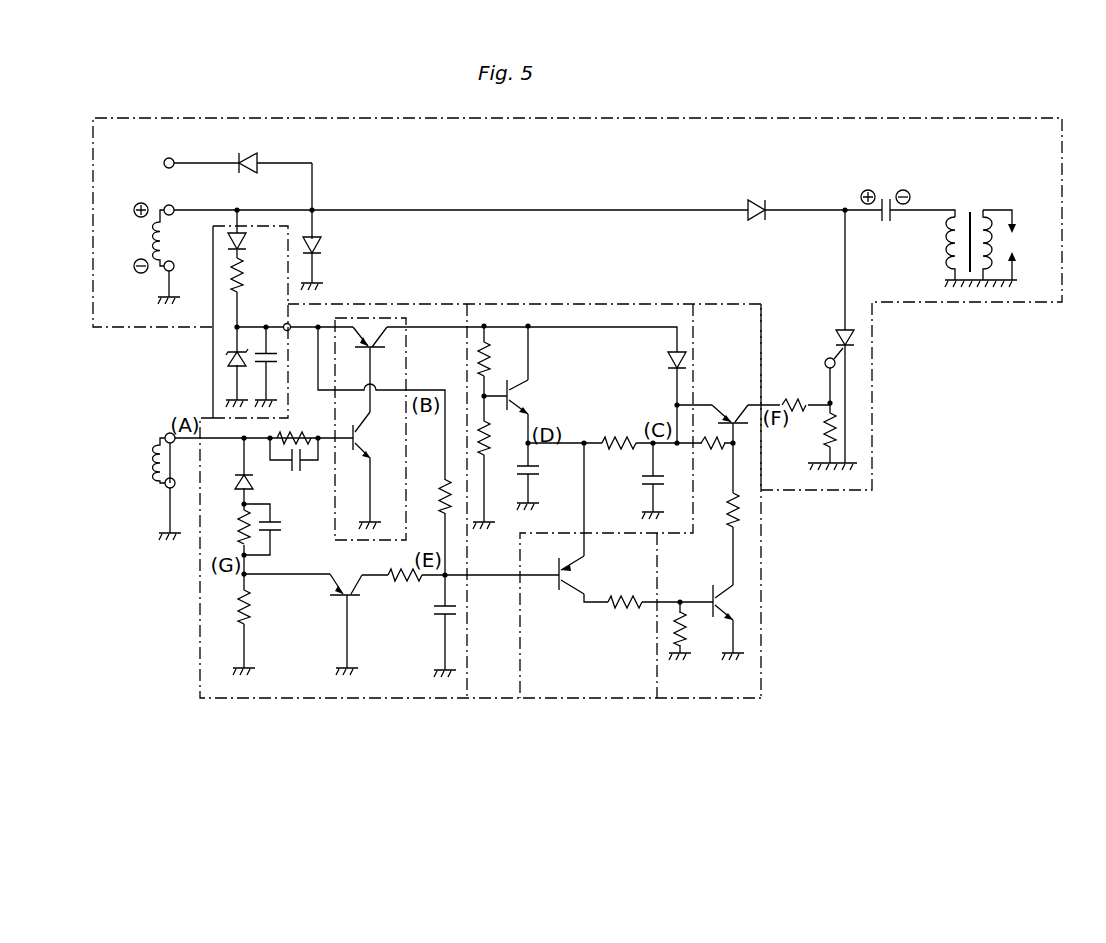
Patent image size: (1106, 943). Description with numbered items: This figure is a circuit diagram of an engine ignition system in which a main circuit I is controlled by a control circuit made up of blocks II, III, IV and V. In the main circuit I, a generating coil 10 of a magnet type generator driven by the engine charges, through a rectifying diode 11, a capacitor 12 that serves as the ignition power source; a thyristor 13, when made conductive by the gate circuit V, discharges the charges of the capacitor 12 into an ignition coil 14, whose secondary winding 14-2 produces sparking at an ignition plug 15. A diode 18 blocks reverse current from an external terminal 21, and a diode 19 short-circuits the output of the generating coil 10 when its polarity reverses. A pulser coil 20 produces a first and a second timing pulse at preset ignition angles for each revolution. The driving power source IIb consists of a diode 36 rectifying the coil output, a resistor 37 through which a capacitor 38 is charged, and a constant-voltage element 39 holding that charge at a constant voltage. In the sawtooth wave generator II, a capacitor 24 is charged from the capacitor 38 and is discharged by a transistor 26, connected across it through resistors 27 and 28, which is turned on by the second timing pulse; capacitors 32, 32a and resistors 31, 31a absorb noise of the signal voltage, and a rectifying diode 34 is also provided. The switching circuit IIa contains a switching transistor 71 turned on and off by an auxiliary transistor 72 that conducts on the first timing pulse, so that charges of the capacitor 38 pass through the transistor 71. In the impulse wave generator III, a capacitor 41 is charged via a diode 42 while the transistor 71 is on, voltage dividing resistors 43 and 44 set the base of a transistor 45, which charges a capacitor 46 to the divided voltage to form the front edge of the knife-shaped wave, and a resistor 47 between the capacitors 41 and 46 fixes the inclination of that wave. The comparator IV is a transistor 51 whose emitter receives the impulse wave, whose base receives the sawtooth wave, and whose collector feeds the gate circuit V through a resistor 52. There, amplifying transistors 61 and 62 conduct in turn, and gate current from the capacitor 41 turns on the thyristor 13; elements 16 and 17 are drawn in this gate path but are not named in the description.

The generating coil 10 is at (150, 237).
The rectifying diode 11 is at (763, 202).
The capacitor 12 is at (886, 198).
The thyristor 13 is at (836, 336).
The ignition coil 14 is at (968, 210).
The secondary winding 14-2 is at (989, 238).
The ignition plug 15 is at (1016, 240).
The gate resistor 16 is at (792, 400).
The gate resistor 17 is at (818, 435).
The diode 18 is at (248, 159).
The diode 19 is at (322, 250).
The pulser coil 20 is at (149, 486).
The external terminal 21 is at (200, 150).
The capacitor 24 is at (432, 620).
The transistor 26 is at (345, 586).
The resistor 27 is at (398, 580).
The resistor 28 is at (252, 603).
The resistor 31 is at (234, 525).
The resistor 31a is at (294, 437).
The capacitor 32 is at (282, 525).
The capacitor 32a is at (297, 472).
The rectifying diode 34 is at (236, 480).
The diode 36 is at (248, 243).
The resistor 37 is at (244, 273).
The capacitor 38 is at (259, 364).
The constant-voltage element 39 is at (226, 363).
The capacitor 41 is at (642, 483).
The diode 42 is at (665, 362).
The voltage dividing resistor 43 is at (491, 357).
The voltage dividing resistor 44 is at (491, 437).
The transistor 45 is at (522, 393).
The capacitor 46 is at (541, 473).
The resistor 47 is at (615, 439).
The transistor 51 is at (583, 573).
The resistor 52 is at (629, 602).
The amplifying transistor 61 is at (724, 598).
The amplifying transistor 62 is at (733, 408).
The switching transistor 71 is at (376, 350).
The auxiliary transistor 72 is at (368, 437).
The main circuit I is at (975, 118).
The sawtooth wave generator II is at (307, 698).
The switching circuit IIa is at (406, 352).
The driving power source IIb is at (213, 337).
The impulse wave generator III is at (495, 698).
The comparator IV is at (605, 698).
The gate circuit V is at (715, 698).